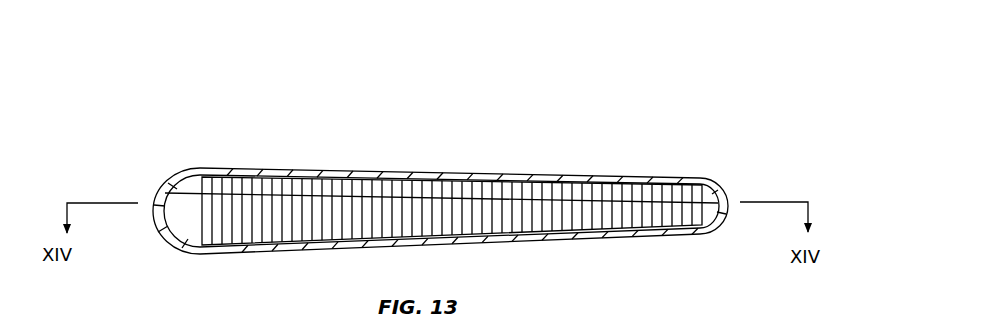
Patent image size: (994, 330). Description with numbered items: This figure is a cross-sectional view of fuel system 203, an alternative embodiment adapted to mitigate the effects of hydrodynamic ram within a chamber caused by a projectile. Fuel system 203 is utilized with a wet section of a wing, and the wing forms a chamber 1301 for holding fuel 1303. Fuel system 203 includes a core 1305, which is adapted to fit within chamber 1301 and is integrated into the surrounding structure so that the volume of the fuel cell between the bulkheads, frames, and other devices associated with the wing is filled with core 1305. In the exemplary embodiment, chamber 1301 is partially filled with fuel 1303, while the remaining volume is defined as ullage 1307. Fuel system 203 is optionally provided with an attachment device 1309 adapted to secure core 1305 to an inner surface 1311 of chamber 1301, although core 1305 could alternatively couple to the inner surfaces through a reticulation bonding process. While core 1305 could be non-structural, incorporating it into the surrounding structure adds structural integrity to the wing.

The fuel system 203 is at (428, 171).
The chamber 1301 is at (711, 187).
The fuel 1303 is at (192, 232).
The core 1305 is at (564, 236).
The ullage 1307 is at (191, 181).
The attachment device 1309 is at (213, 244).
The inner surface 1311 is at (298, 172).